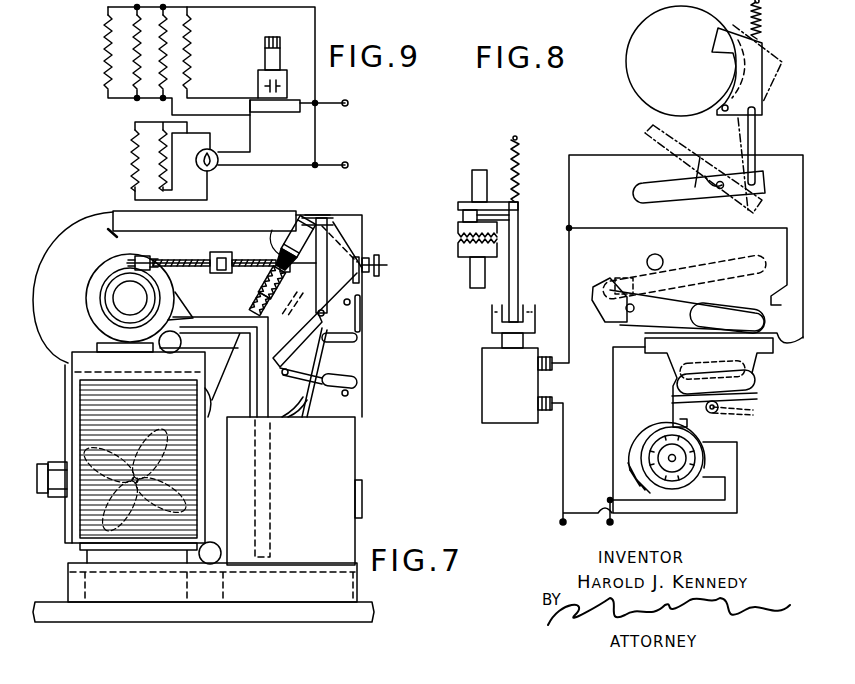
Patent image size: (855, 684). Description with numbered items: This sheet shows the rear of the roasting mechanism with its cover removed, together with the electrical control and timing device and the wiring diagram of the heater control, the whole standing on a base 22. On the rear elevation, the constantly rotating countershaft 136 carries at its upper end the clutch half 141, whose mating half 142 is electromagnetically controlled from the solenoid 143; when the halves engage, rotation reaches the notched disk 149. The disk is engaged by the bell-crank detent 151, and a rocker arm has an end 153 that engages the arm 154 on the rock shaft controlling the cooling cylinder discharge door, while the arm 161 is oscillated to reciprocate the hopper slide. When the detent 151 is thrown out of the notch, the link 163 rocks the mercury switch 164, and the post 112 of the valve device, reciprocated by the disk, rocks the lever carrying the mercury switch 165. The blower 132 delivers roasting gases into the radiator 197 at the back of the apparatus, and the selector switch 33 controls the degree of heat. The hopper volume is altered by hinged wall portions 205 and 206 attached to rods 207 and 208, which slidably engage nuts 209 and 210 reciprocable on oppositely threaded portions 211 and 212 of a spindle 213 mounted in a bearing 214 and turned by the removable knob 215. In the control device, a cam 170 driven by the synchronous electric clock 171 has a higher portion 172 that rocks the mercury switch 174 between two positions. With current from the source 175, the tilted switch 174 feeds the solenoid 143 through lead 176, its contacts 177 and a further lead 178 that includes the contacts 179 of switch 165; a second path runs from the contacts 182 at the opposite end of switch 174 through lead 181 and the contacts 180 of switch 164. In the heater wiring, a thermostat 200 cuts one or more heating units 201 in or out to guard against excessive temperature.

In FIG. 7, the base plate 22 is at (203, 612).
In FIG. 9, the selector switch 33 is at (216, 170).
In FIG. 7, the selector switch 33 is at (50, 490).
In FIG. 8, the post 112 is at (663, 256).
In FIG. 7, the blower 132 is at (88, 282).
In FIG. 7, the countershaft 136 is at (294, 491).
In FIG. 7, the clutch half 141 is at (250, 309).
In FIG. 8, the clutch half 141 is at (458, 252).
In FIG. 7, the clutch half 142 is at (262, 295).
In FIG. 8, the clutch half 142 is at (458, 231).
In FIG. 8, the solenoid 143 is at (490, 380).
In FIG. 8, the notched disk 149 is at (627, 67).
In FIG. 7, the bell-crank detent 151 is at (360, 285).
In FIG. 8, the bell-crank detent 151 is at (728, 33).
In FIG. 7, the rocker arm end 153 is at (308, 390).
In FIG. 7, the arm 154 is at (293, 410).
In FIG. 7, the arm 161 is at (334, 220).
In FIG. 7, the link 163 is at (361, 318).
In FIG. 8, the link 163 is at (756, 137).
In FIG. 7, the mercury switch 164 is at (347, 350).
In FIG. 8, the mercury switch 164 is at (663, 195).
In FIG. 7, the mercury switch 165 is at (343, 382).
In FIG. 8, the mercury switch 165 is at (680, 323).
In FIG. 8, the cam 170 is at (697, 437).
In FIG. 8, the electric clock 171 is at (696, 459).
In FIG. 8, the higher portion of cam 172 is at (628, 452).
In FIG. 8, the mercury switch 174 is at (760, 382).
In FIG. 8, the source of current 175 is at (582, 518).
In FIG. 8, the lead 176 is at (612, 398).
In FIG. 8, the contacts 177 is at (747, 375).
In FIG. 8, the lead 178 is at (787, 245).
In FIG. 8, the contacts 179 is at (748, 317).
In FIG. 8, the contacts 180 is at (683, 187).
In FIG. 8, the lead 181 is at (803, 194).
In FIG. 8, the contacts 182 is at (672, 380).
In FIG. 7, the radiator 197 is at (87, 415).
In FIG. 9, the thermostat 200 is at (263, 52).
In FIG. 9, the heating unit 201 is at (189, 66).
In FIG. 7, the hinged wall portion 205 is at (143, 260).
In FIG. 7, the hinged wall portion 206 is at (290, 238).
In FIG. 7, the rod 207 is at (135, 272).
In FIG. 7, the rod 208 is at (288, 280).
In FIG. 7, the nut 209 is at (134, 219).
In FIG. 7, the nut 210 is at (268, 237).
In FIG. 7, the threaded portion 211 is at (172, 259).
In FIG. 7, the threaded portion 212 is at (252, 261).
In FIG. 7, the spindle 213 is at (350, 247).
In FIG. 7, the bearing 214 is at (213, 254).
In FIG. 7, the operating handle 215 is at (377, 262).